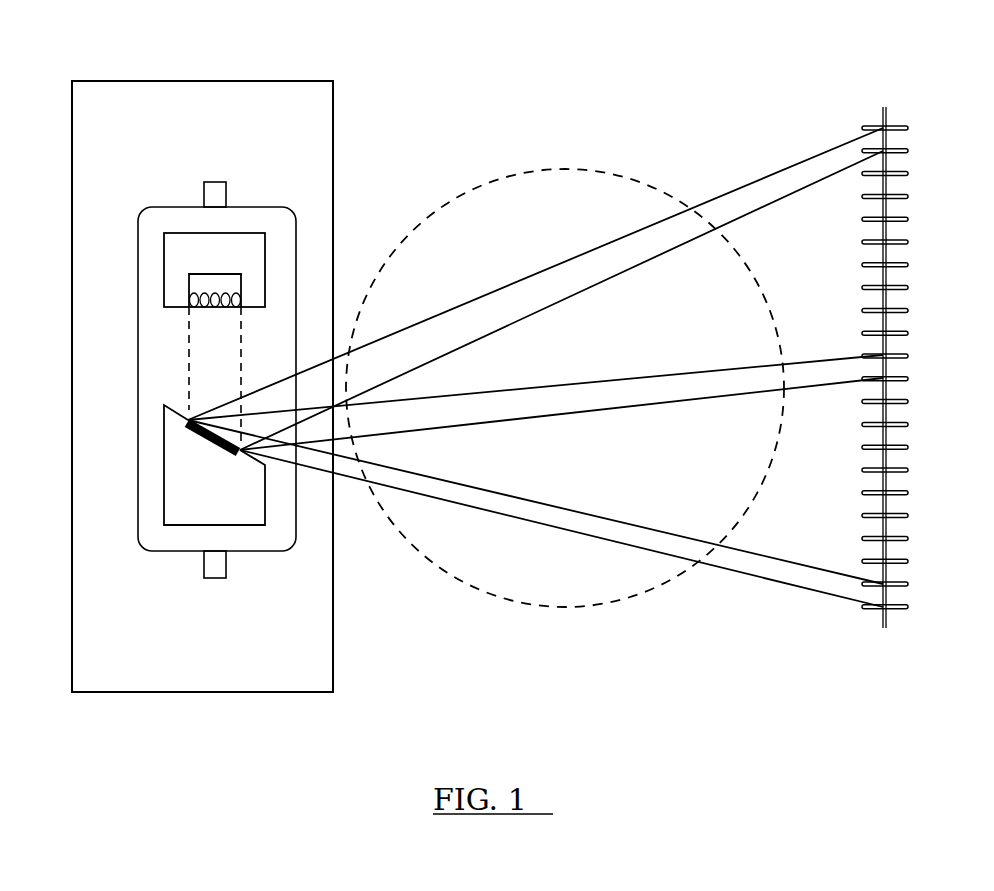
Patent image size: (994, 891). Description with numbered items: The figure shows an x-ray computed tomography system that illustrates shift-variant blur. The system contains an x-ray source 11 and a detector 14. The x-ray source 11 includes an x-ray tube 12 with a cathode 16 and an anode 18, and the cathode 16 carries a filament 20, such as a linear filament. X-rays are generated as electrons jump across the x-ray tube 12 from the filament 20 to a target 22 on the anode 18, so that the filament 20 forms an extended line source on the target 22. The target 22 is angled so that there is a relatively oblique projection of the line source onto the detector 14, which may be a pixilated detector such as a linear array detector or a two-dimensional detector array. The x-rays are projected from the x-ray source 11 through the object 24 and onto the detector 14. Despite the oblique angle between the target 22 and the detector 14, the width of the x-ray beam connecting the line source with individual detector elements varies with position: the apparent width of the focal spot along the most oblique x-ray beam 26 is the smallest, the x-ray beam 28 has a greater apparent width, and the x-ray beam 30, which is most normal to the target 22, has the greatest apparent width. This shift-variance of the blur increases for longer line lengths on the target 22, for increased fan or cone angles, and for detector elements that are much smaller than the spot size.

The x-ray source 11 is at (233, 81).
The x-ray tube 12 is at (72, 363).
The detector 14 is at (886, 107).
The cathode 16 is at (163, 273).
The anode 18 is at (163, 508).
The filament 20 is at (217, 307).
The target 22 is at (197, 437).
The object 24 is at (622, 603).
The most oblique x-ray beam 26 is at (785, 585).
The x-ray beam 28 is at (803, 390).
The x-ray beam most normal to the target 30 is at (772, 173).